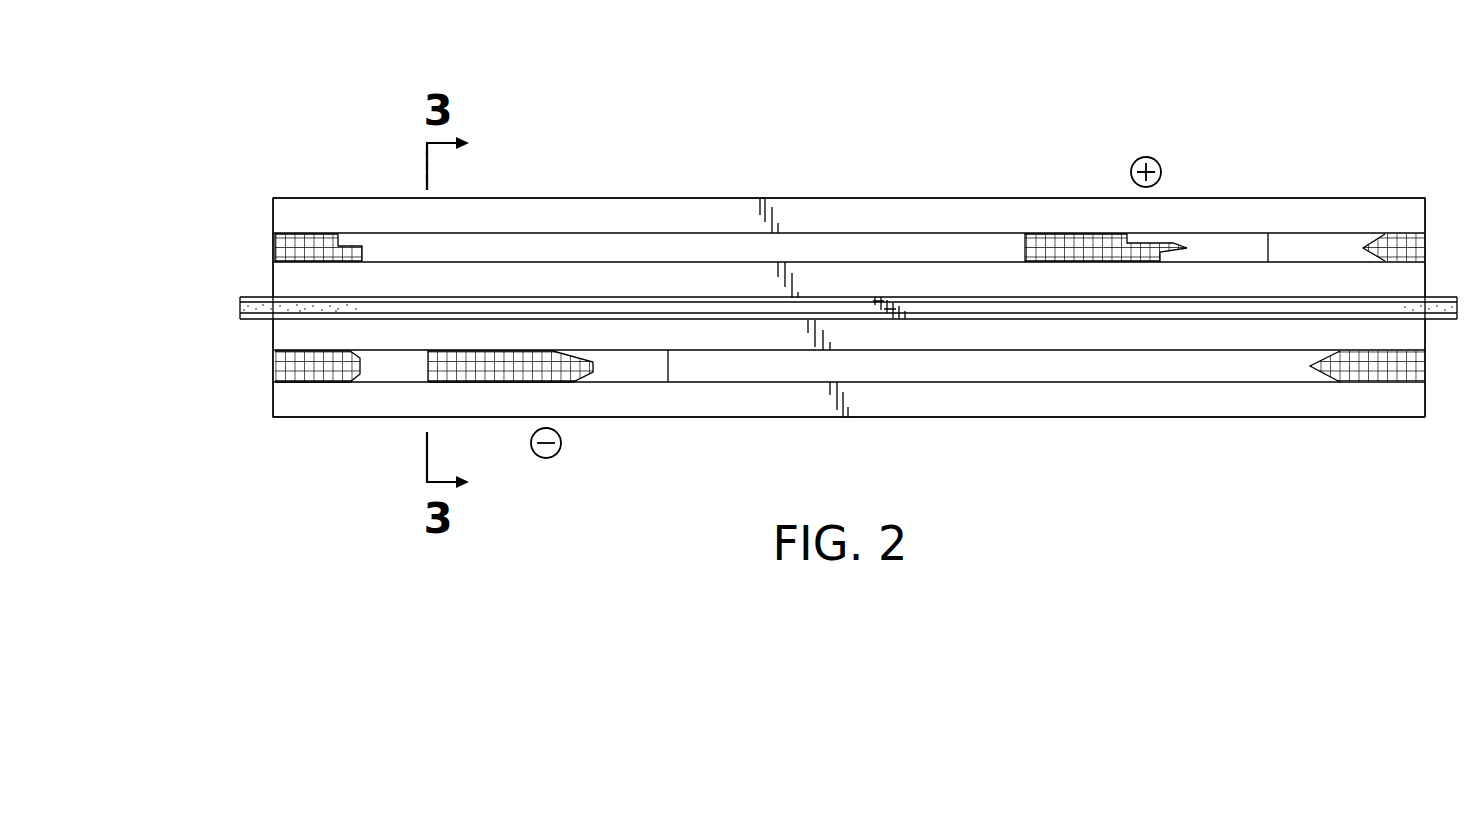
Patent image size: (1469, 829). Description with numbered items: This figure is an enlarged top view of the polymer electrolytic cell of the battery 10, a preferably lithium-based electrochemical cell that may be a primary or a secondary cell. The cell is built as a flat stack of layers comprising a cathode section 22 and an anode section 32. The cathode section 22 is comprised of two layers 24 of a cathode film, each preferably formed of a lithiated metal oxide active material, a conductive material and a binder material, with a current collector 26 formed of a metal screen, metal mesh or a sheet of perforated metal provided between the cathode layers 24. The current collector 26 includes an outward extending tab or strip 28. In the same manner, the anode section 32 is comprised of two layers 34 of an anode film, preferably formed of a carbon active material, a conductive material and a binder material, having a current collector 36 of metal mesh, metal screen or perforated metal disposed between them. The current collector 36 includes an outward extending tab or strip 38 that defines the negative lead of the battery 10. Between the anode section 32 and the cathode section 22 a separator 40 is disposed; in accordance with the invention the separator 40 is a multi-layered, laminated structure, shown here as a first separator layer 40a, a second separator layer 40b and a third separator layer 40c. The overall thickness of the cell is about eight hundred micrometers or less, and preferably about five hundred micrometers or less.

The battery 10 is at (833, 100).
The cathode section 22 is at (259, 243).
The cathode layers 24 is at (557, 278).
The current collector 26 is at (707, 247).
The tab 28 is at (1230, 245).
The anode section 32 is at (268, 372).
The anode layers 34 is at (730, 338).
The current collector 36 is at (960, 372).
The tab 38 is at (617, 370).
The separator 40 is at (239, 308).
The first separator layer 40a is at (918, 300).
The second separator layer 40b is at (983, 308).
The third separator layer 40c is at (1043, 317).